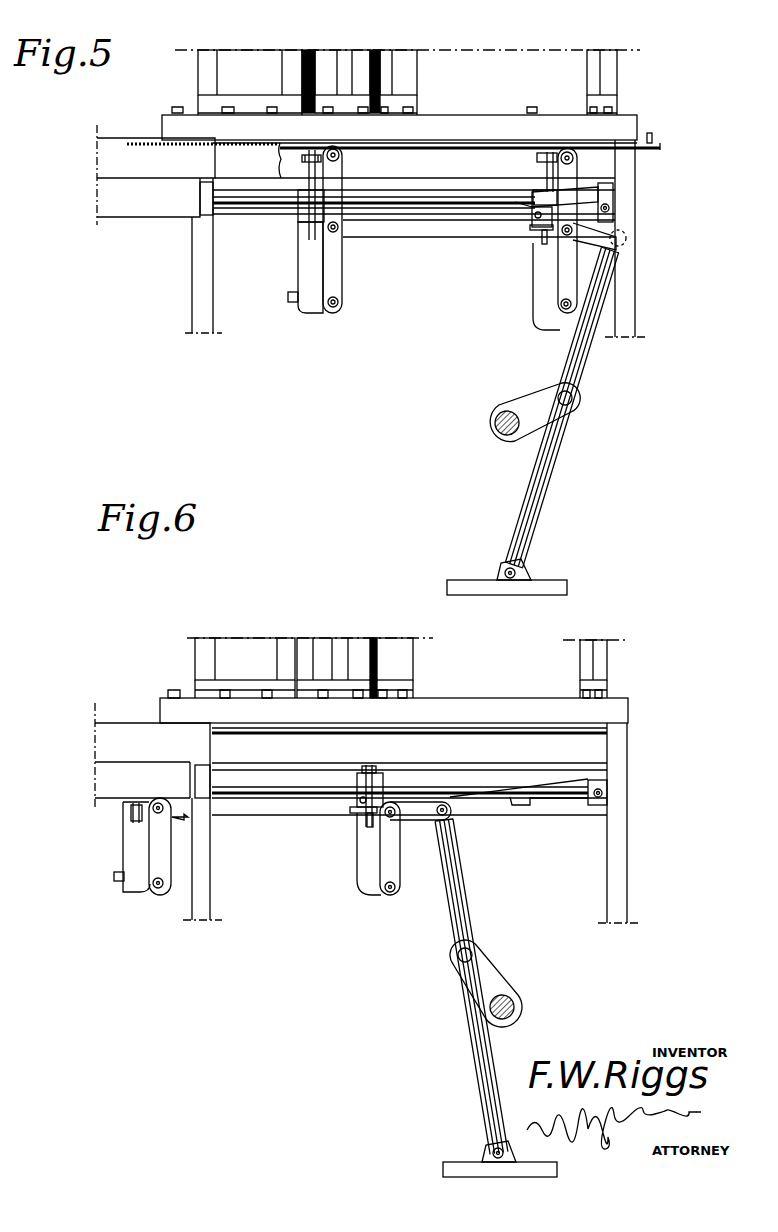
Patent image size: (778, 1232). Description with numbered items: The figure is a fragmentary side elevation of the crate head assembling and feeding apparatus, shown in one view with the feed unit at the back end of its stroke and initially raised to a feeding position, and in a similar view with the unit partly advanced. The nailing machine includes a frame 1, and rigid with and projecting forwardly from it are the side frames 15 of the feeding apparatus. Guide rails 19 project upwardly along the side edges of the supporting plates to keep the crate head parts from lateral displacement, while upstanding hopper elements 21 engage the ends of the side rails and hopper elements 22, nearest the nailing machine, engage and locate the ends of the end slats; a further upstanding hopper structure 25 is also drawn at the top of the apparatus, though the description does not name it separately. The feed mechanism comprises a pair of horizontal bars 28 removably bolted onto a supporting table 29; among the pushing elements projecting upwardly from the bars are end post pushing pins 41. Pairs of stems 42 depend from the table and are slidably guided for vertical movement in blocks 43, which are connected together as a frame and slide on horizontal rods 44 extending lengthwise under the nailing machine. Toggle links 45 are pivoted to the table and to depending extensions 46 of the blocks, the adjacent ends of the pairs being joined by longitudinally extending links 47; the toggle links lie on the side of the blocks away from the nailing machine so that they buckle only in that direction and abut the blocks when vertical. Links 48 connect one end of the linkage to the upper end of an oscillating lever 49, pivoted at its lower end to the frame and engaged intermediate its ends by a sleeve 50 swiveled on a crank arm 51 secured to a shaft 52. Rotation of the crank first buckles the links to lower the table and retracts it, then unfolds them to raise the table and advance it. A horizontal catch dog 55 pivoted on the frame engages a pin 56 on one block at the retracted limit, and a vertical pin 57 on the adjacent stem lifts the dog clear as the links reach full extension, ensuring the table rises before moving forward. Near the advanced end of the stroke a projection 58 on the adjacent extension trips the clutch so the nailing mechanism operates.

In FIG. 5, the frame 1 is at (107, 145).
In FIG. 6, the frame 1 is at (366, 813).
In FIG. 5, the side frames 15 is at (250, 163).
In FIG. 6, the side frames 15 is at (590, 747).
In FIG. 5, the guide rails 19 is at (183, 130).
In FIG. 6, the guide rails 19 is at (442, 713).
In FIG. 5, the hopper elements 21 is at (410, 77).
In FIG. 6, the hopper elements 21 is at (597, 667).
In FIG. 5, the hopper elements 22 is at (325, 70).
In FIG. 6, the hopper elements 22 is at (355, 652).
In FIG. 5, the post 25 is at (212, 77).
In FIG. 6, the post 25 is at (205, 652).
In FIG. 5, the horizontal bars 28 is at (660, 143).
In FIG. 5, the table 29 is at (435, 150).
In FIG. 5, the end post pushing pins 41 is at (650, 133).
In FIG. 5, the stems 42 is at (312, 180).
In FIG. 6, the stems 42 is at (367, 773).
In FIG. 5, the blocks 43 is at (310, 207).
In FIG. 6, the blocks 43 is at (373, 783).
In FIG. 5, the horizontal rods 44 is at (395, 213).
In FIG. 6, the horizontal rods 44 is at (263, 793).
In FIG. 5, the toggle links 45 is at (338, 288).
In FIG. 6, the toggle links 45 is at (390, 867).
In FIG. 5, the depending extensions 46 is at (312, 297).
In FIG. 6, the depending extensions 46 is at (370, 875).
In FIG. 5, the longitudinally extending links 47 is at (435, 232).
In FIG. 6, the longitudinally extending links 47 is at (263, 817).
In FIG. 5, the links 48 is at (605, 237).
In FIG. 6, the links 48 is at (423, 813).
In FIG. 5, the oscillating lever 49 is at (548, 477).
In FIG. 6, the oscillating lever 49 is at (470, 903).
In FIG. 5, the sleeve 50 is at (582, 385).
In FIG. 6, the sleeve 50 is at (473, 937).
In FIG. 5, the crank arm 51 is at (540, 407).
In FIG. 6, the crank arm 51 is at (488, 973).
In FIG. 5, the shaft 52 is at (498, 430).
In FIG. 6, the shaft 52 is at (515, 1008).
In FIG. 5, the catch dog 55 is at (590, 208).
In FIG. 6, the catch dog 55 is at (563, 797).
In FIG. 5, the pin 56 is at (532, 225).
In FIG. 6, the pin 56 is at (360, 812).
In FIG. 5, the vertical pin 57 is at (530, 218).
In FIG. 6, the vertical pin 57 is at (347, 807).
In FIG. 5, the projection 58 is at (290, 297).